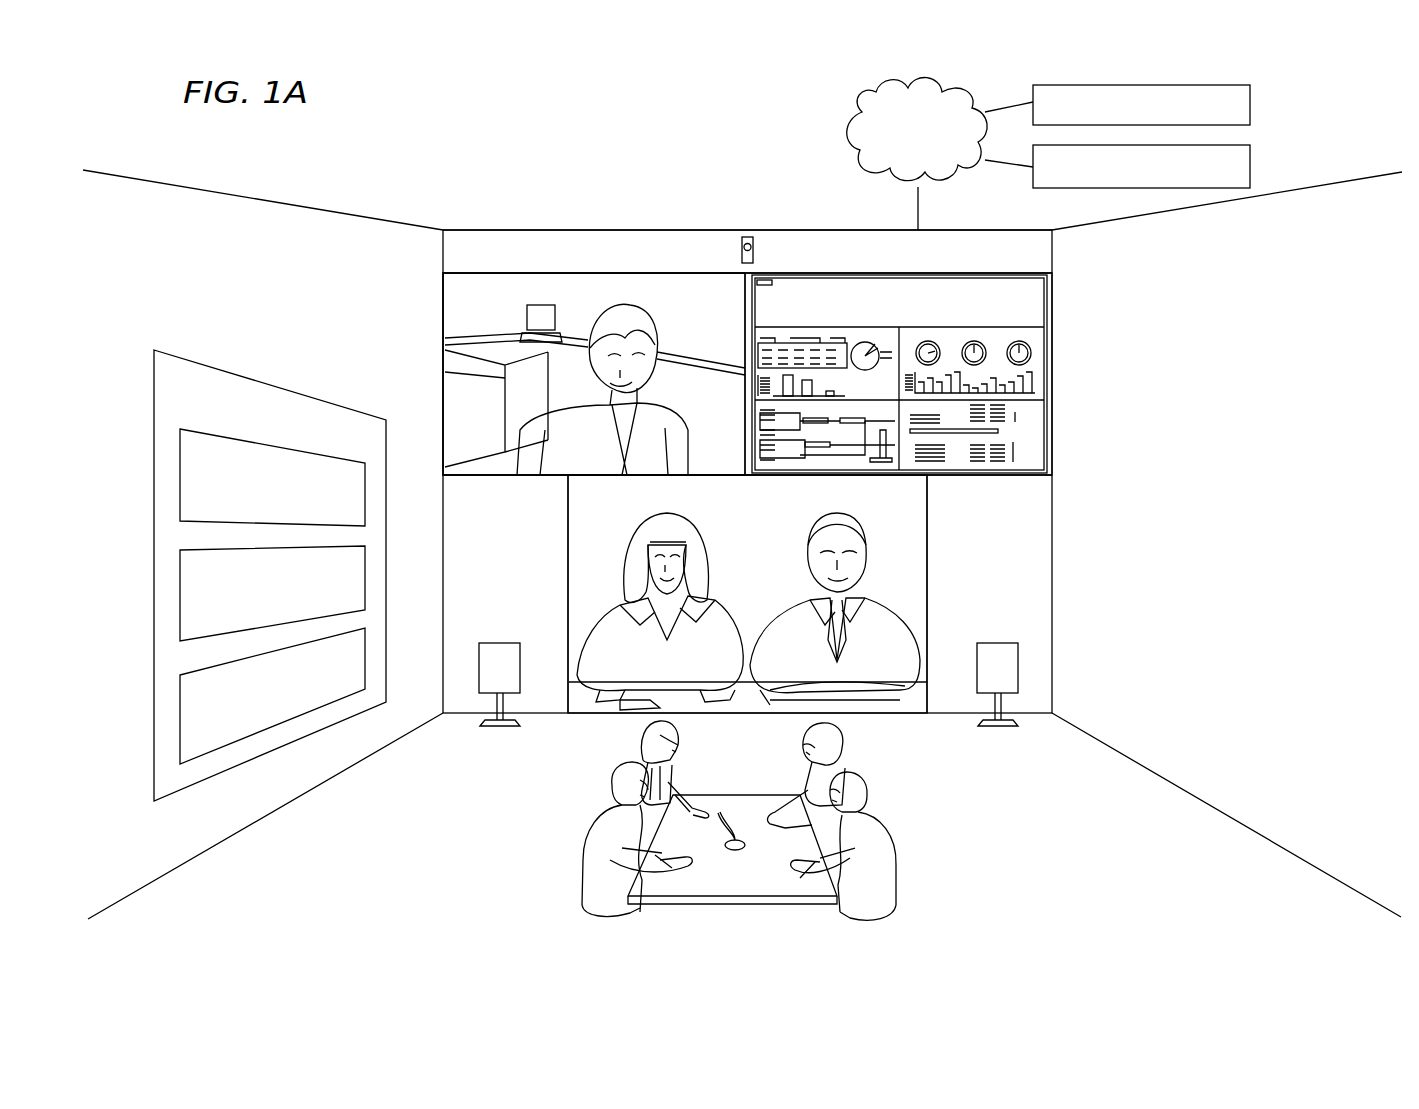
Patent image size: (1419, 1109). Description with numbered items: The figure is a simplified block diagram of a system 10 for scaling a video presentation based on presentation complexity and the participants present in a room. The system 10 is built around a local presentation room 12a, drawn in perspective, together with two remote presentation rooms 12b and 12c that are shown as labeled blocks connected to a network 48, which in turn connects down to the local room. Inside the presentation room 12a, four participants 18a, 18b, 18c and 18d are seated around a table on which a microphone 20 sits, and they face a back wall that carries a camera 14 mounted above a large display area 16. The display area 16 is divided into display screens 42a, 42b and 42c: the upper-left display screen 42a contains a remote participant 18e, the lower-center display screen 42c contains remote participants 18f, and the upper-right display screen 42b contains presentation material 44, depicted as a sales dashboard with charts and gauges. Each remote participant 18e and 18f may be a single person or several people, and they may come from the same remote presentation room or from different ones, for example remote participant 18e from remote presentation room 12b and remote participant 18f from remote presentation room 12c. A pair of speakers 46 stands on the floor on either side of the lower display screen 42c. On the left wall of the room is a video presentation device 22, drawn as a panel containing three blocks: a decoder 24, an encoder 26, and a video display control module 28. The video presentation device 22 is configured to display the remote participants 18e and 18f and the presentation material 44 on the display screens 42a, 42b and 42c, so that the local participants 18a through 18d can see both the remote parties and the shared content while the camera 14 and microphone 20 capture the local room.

The system 10 is at (470, 118).
The presentation room 12a is at (563, 227).
The remote presentation room 12b is at (1250, 106).
The remote presentation room 12c is at (1250, 166).
The camera 14 is at (755, 249).
The display area 16 is at (702, 258).
The participant 18a is at (640, 745).
The participant 18b is at (848, 750).
The participant 18c is at (612, 782).
The participant 18d is at (866, 792).
The remote participant 18e is at (653, 330).
The remote participant 18f is at (638, 535).
The microphone 20 is at (735, 806).
The video presentation device 22 is at (146, 372).
The decoder 24 is at (180, 478).
The encoder 26 is at (180, 600).
The video display control module 28 is at (180, 724).
The display screen 42a is at (500, 273).
The display screen 42b is at (971, 273).
The display screen 42c is at (568, 547).
The presentation material 44 is at (1040, 349).
The speakers 46 is at (500, 643).
The network 48 is at (856, 113).